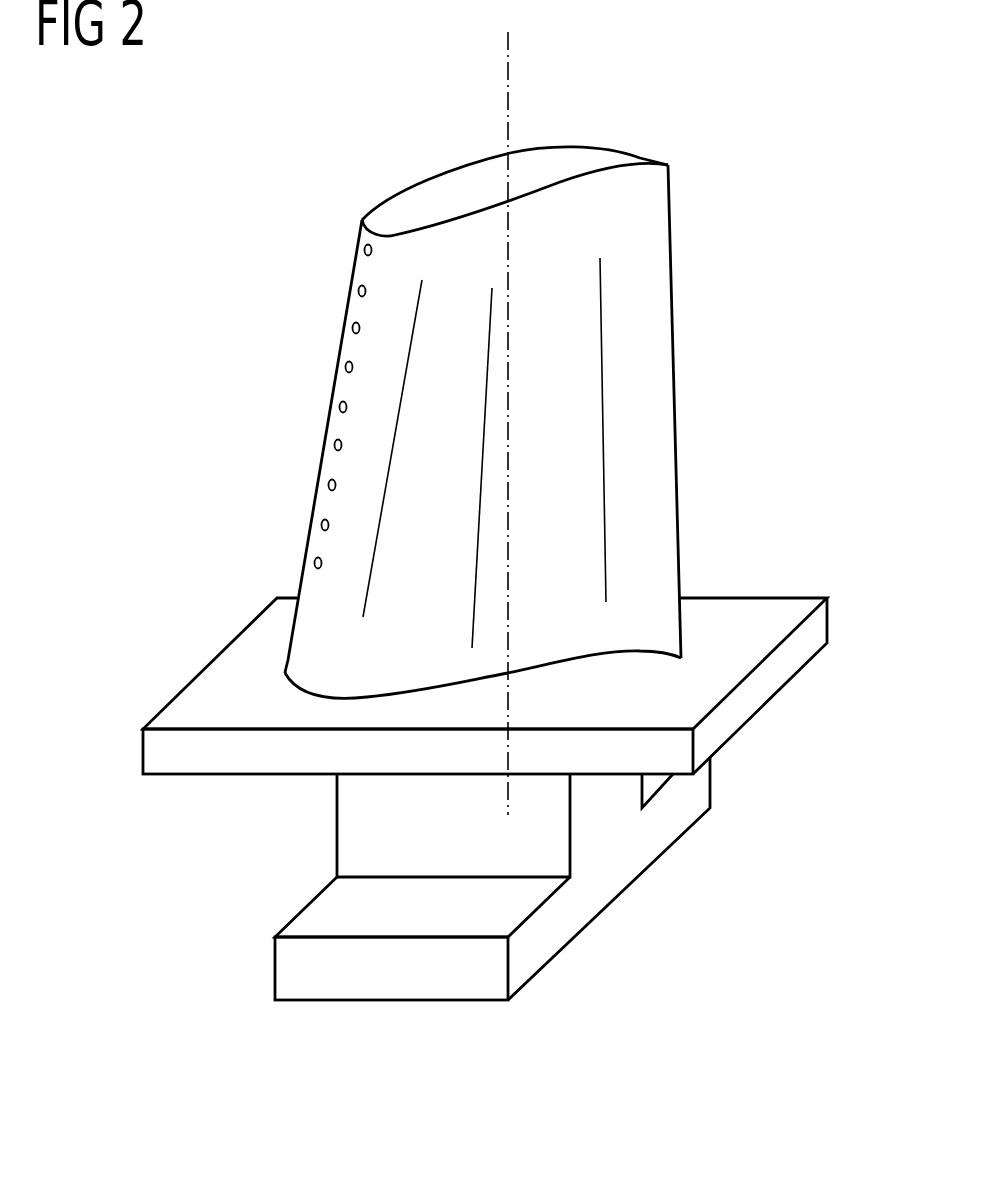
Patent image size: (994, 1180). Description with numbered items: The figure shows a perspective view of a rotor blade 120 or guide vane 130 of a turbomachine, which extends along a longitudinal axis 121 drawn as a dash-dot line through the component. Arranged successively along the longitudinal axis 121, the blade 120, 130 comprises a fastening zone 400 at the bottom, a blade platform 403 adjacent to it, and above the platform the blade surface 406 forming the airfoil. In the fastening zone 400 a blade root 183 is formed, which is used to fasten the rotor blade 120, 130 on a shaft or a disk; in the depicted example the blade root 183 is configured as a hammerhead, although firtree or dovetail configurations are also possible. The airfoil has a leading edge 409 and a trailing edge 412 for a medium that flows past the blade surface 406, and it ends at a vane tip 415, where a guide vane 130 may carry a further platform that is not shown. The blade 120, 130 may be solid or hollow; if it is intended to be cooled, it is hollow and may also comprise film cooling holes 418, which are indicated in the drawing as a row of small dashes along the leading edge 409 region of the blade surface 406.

The rotor blade 120 is at (222, 557).
The guide vane 130 is at (489, 512).
The longitudinal axis 121 is at (510, 58).
The vane tip 415 is at (428, 190).
The leading edge 409 is at (325, 345).
The trailing edge 412 is at (688, 373).
The blade surface 406 is at (353, 472).
The film cooling holes 418 is at (362, 251).
The blade platform 403 is at (775, 677).
The fastening zone 400 is at (638, 849).
The blade root 183 is at (320, 913).